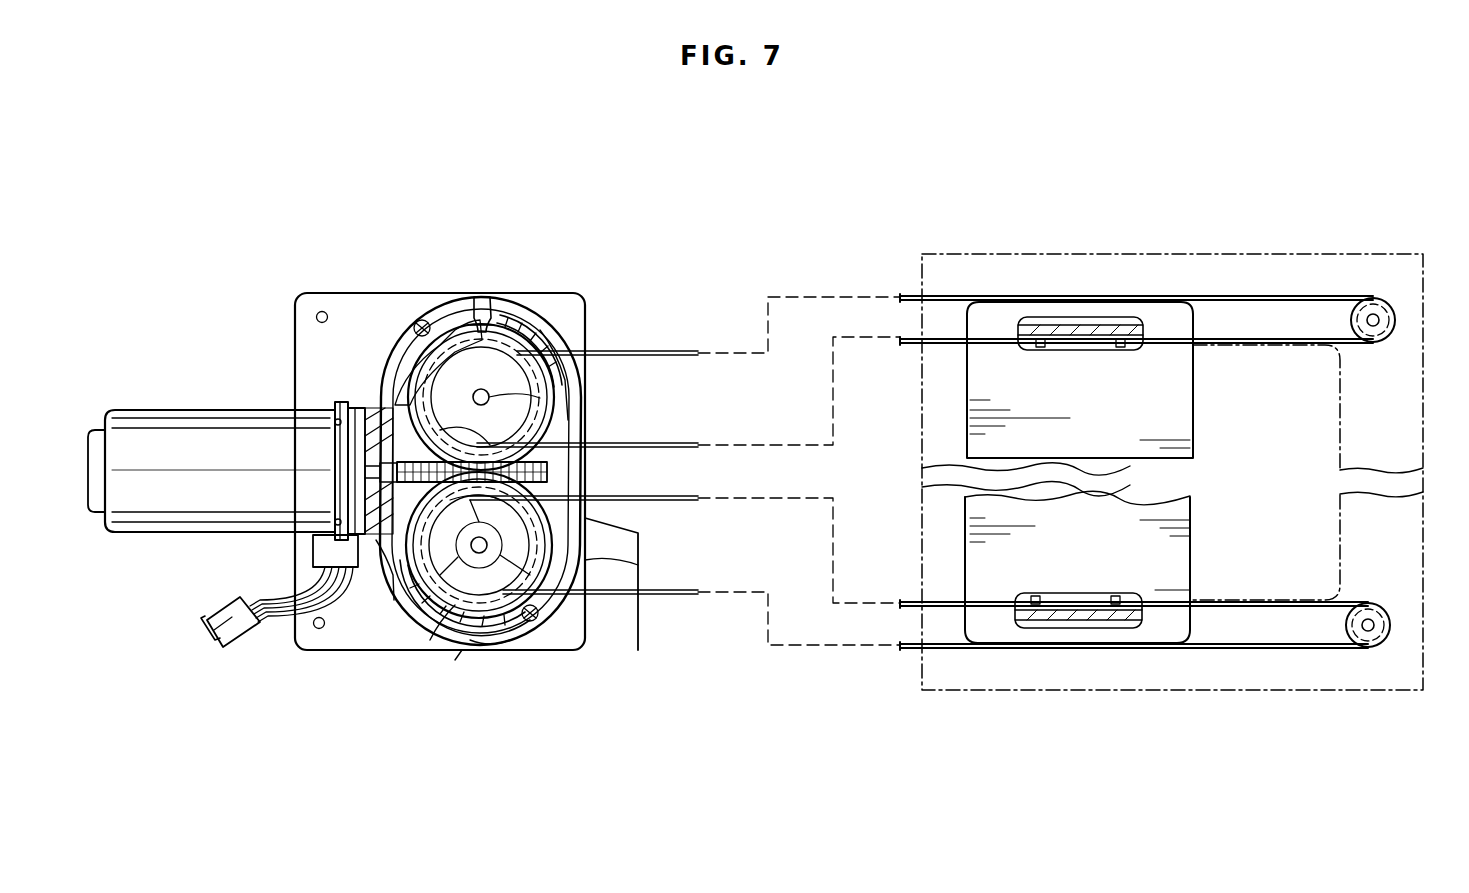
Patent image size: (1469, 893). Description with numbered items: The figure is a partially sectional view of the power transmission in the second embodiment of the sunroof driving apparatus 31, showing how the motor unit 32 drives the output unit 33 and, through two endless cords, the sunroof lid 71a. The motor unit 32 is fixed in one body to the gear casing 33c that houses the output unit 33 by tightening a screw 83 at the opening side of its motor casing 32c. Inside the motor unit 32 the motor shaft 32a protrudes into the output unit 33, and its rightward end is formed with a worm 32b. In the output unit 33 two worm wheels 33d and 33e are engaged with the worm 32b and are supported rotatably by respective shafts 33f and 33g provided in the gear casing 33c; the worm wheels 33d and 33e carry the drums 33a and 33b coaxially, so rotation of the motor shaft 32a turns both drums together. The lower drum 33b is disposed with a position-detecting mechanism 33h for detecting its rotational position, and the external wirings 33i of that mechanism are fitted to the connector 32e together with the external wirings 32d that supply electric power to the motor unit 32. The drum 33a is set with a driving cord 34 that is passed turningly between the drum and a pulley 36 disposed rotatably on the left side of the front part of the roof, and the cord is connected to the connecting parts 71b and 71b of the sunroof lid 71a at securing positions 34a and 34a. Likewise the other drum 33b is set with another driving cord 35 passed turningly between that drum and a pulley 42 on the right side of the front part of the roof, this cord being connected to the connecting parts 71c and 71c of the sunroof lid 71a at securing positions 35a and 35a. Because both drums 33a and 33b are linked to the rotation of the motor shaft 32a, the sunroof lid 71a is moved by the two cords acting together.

The sunroof driving apparatus 31 is at (756, 232).
The motor unit 32 is at (162, 410).
The motor shaft 32a is at (376, 575).
The worm 32b is at (588, 463).
The motor casing 32c is at (292, 426).
The external wirings 32d is at (258, 592).
The connector 32e is at (218, 640).
The output unit 33 is at (437, 300).
The drum 33a is at (489, 304).
The drum 33b is at (455, 622).
The gear casing 33c is at (566, 325).
The worm wheel 33d is at (540, 303).
The worm wheel 33e is at (510, 640).
The shaft 33f is at (556, 392).
The shaft 33g is at (612, 562).
The position-detecting mechanism 33h is at (430, 640).
The external wirings 33i is at (270, 617).
The driving cord 34 is at (683, 352).
The securing positions 34a is at (1040, 350).
The driving cord 35 is at (688, 595).
The securing positions 35a is at (1035, 628).
The pulley 36 is at (1393, 314).
The pulley 42 is at (1388, 620).
The sunroof lid 71a is at (1196, 420).
The connecting parts 71b is at (1060, 322).
The connecting parts 71c is at (1040, 593).
The screw 83 is at (333, 400).